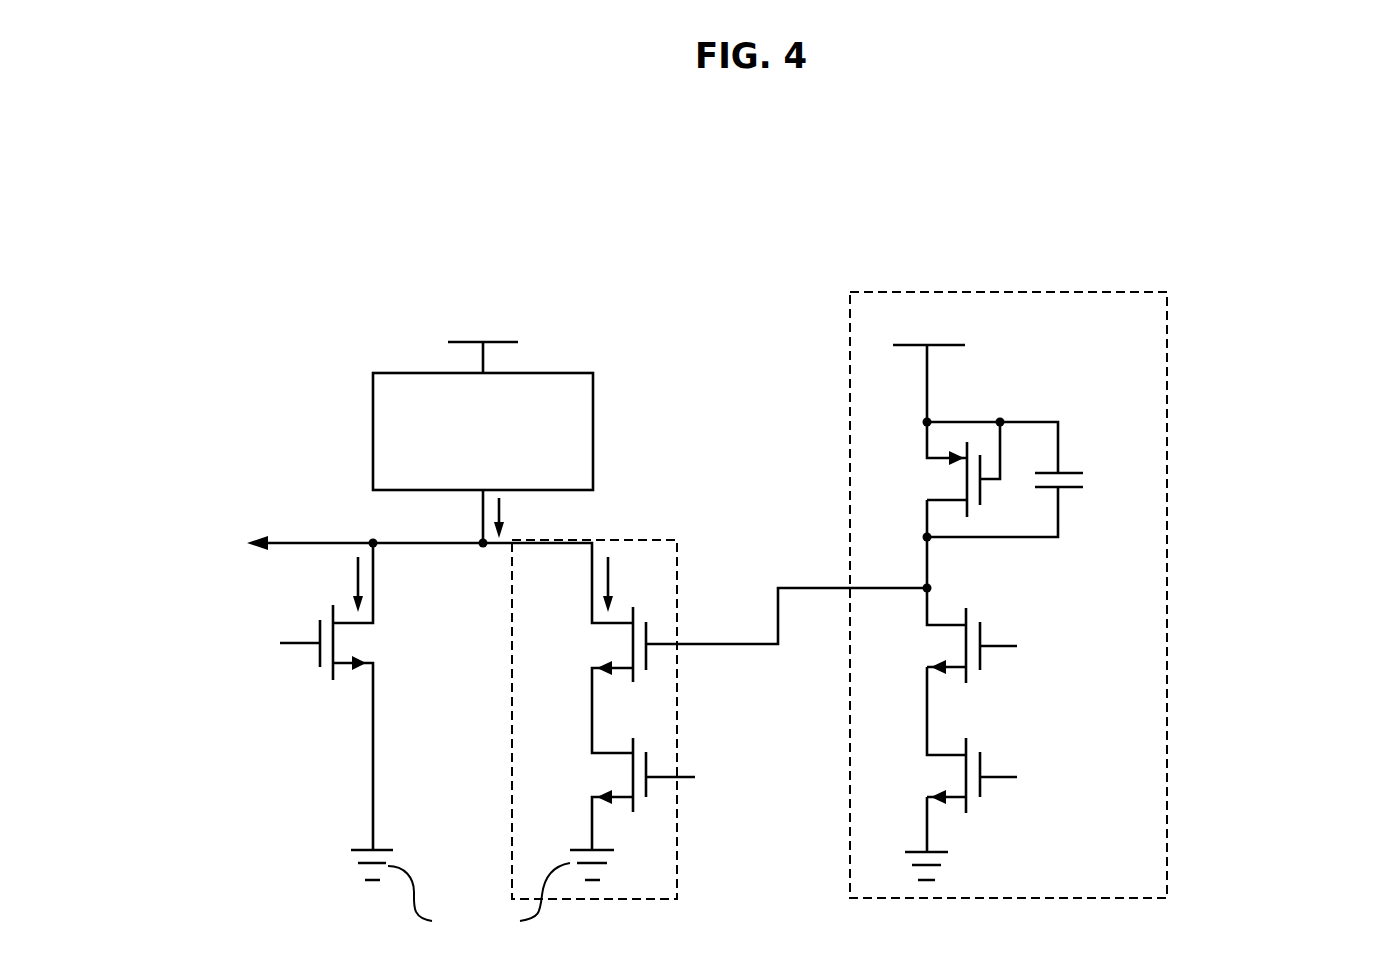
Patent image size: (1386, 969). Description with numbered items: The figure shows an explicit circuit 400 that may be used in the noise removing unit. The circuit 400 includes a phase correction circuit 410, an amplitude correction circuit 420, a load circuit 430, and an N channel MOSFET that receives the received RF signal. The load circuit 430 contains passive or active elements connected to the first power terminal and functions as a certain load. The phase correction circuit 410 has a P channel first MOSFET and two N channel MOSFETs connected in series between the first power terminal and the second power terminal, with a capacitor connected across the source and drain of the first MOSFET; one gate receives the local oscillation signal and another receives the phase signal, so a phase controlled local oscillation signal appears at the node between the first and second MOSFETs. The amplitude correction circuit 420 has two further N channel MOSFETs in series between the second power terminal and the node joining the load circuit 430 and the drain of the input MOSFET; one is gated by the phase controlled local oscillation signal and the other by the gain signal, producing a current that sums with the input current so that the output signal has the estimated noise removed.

The circuit 400 is at (1038, 200).
The phase correction circuit 410 is at (1167, 595).
The amplitude correction circuit 420 is at (634, 540).
The load circuit 430 is at (543, 373).